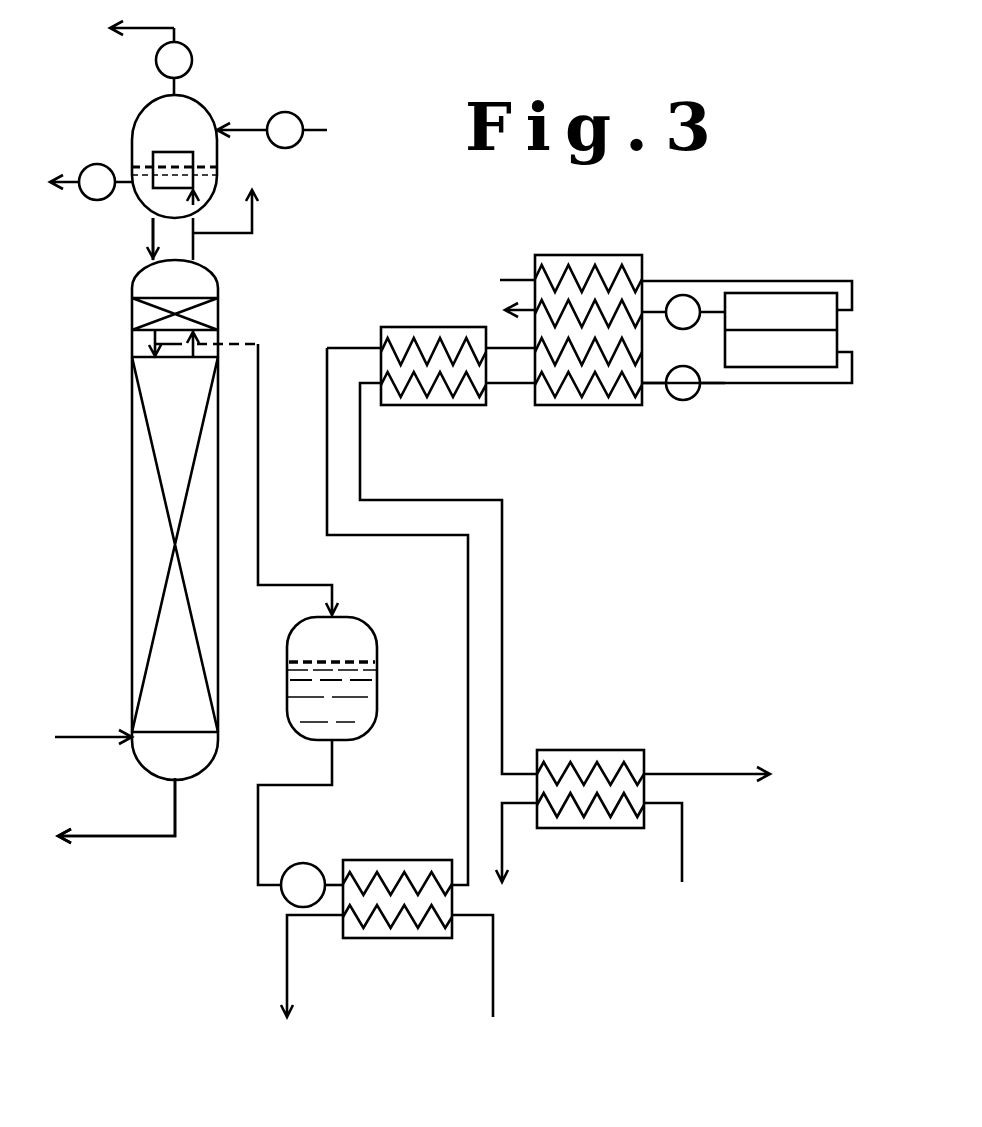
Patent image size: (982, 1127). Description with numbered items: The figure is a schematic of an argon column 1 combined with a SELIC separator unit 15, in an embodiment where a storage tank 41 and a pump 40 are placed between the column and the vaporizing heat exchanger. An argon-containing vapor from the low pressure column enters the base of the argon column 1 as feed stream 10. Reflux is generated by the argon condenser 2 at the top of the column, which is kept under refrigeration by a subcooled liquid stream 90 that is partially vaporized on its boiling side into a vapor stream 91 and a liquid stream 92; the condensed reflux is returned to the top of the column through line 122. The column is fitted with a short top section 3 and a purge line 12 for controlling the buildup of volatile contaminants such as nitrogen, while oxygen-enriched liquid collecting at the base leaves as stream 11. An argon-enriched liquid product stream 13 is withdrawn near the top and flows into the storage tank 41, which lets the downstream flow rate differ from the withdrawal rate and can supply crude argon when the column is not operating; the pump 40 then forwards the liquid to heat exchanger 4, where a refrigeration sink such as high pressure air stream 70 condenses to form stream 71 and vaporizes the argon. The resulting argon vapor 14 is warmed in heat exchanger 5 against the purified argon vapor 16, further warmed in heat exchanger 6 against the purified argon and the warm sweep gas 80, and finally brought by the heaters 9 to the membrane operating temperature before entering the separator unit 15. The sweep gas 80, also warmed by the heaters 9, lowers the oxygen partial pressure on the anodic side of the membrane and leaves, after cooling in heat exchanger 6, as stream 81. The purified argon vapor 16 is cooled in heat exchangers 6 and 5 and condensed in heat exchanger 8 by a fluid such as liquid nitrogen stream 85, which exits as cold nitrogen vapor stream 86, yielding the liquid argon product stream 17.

The argon column 1 is at (138, 551).
The argon condenser 2 is at (176, 143).
The short top section 3 is at (128, 298).
The heat exchanger 4 is at (372, 860).
The heat exchanger 5 is at (420, 405).
The heat exchanger 6 is at (610, 408).
The heat exchanger 8 is at (577, 750).
The heaters 9 is at (700, 300).
The feed stream 10 is at (70, 735).
The stream 11 is at (148, 838).
The purge line 12 is at (245, 236).
The liquid product stream 13 is at (264, 357).
The argon vapor 14 is at (352, 348).
The separator unit 15 is at (794, 323).
The purified argon vapor 16 is at (425, 500).
The liquid argon product stream 17 is at (692, 775).
The pump 40 is at (315, 863).
The storage tank 41 is at (378, 652).
The stream 70 is at (495, 978).
The stream 71 is at (285, 985).
The sweep gas 80 is at (520, 278).
The stream 81 is at (522, 300).
The stream 85 is at (685, 858).
The stream 86 is at (505, 858).
The liquid stream 90 is at (316, 128).
The vapor stream 91 is at (148, 36).
The liquid stream 92 is at (72, 180).
The line 122 is at (152, 250).